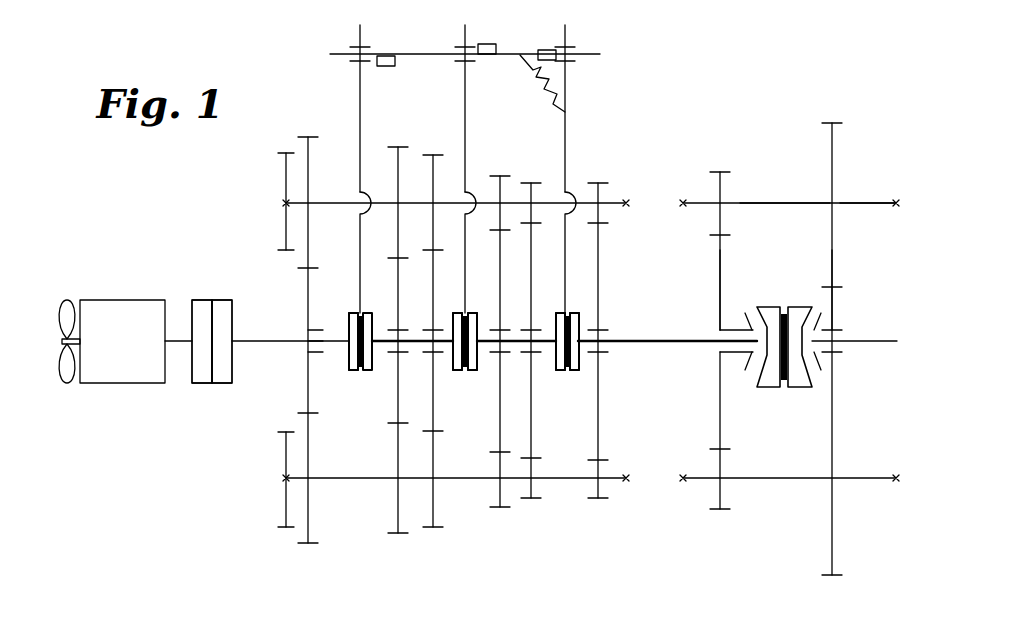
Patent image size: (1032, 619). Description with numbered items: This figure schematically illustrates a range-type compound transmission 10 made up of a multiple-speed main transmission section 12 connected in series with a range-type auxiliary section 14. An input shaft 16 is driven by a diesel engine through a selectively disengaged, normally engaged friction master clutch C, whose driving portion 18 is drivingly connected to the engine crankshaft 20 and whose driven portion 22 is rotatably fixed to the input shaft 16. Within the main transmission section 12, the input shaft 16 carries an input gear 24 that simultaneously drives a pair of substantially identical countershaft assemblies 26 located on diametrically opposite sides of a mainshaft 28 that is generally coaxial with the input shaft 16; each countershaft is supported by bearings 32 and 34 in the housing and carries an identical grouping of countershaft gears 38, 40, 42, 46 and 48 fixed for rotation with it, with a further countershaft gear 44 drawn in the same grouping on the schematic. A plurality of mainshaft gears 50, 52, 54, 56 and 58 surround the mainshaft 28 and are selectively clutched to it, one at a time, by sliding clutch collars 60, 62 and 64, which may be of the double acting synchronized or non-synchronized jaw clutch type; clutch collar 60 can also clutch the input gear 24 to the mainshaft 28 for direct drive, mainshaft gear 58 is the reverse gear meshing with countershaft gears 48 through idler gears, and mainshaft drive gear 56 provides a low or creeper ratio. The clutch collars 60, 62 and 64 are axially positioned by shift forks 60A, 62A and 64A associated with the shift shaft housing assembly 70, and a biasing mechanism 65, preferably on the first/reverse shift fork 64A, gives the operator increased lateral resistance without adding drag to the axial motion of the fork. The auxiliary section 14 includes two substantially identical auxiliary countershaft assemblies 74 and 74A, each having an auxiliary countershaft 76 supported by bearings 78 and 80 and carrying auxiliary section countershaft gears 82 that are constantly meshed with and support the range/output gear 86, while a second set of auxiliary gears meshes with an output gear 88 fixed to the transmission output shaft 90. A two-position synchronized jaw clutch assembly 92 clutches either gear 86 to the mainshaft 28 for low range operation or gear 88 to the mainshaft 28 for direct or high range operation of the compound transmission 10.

The compound transmission 10 is at (537, 306).
The main transmission section 12 is at (454, 306).
The auxiliary section 14 is at (777, 346).
The input shaft 16 is at (268, 340).
The driving portion 18 is at (198, 383).
The engine crankshaft 20 is at (178, 340).
The driven portion 22 is at (222, 383).
The input gear 24 is at (308, 315).
The countershaft assembly 26 is at (338, 195).
The mainshaft 28 is at (652, 345).
The bearing 32 is at (284, 478).
The bearing 34 is at (630, 480).
The countershaft gear 38 is at (308, 525).
The countershaft gear 40 is at (398, 525).
The countershaft gear 42 is at (433, 515).
The gear 44 is at (498, 495).
The countershaft gear 46 is at (531, 490).
The countershaft gear 48 is at (598, 490).
The mainshaft gear 50 is at (398, 413).
The mainshaft gear 52 is at (433, 420).
The mainshaft gear 54 is at (500, 440).
The mainshaft drive gear 56 is at (531, 420).
The mainshaft gear 58 is at (596, 440).
The clutch collar 60 is at (349, 350).
The shift fork 60A is at (358, 265).
The clutch collar 62 is at (466, 313).
The shift fork 62A is at (465, 146).
The clutch collar 64 is at (565, 313).
The shift fork 64A is at (565, 158).
The biasing mechanism 65 is at (560, 96).
The shift shaft housing assembly 70 is at (336, 50).
The auxiliary countershaft assembly 74 is at (773, 198).
The auxiliary countershaft assembly 74A is at (762, 478).
The auxiliary countershaft 76 is at (810, 205).
The bearing 78 is at (683, 208).
The bearing 80 is at (898, 200).
The auxiliary section countershaft gear 82 is at (721, 190).
The range/output gear 86 is at (719, 275).
The output gear 88 is at (831, 300).
The transmission output shaft 90 is at (862, 336).
The synchronized jaw clutch assembly 92 is at (766, 395).
The master clutch C is at (218, 300).